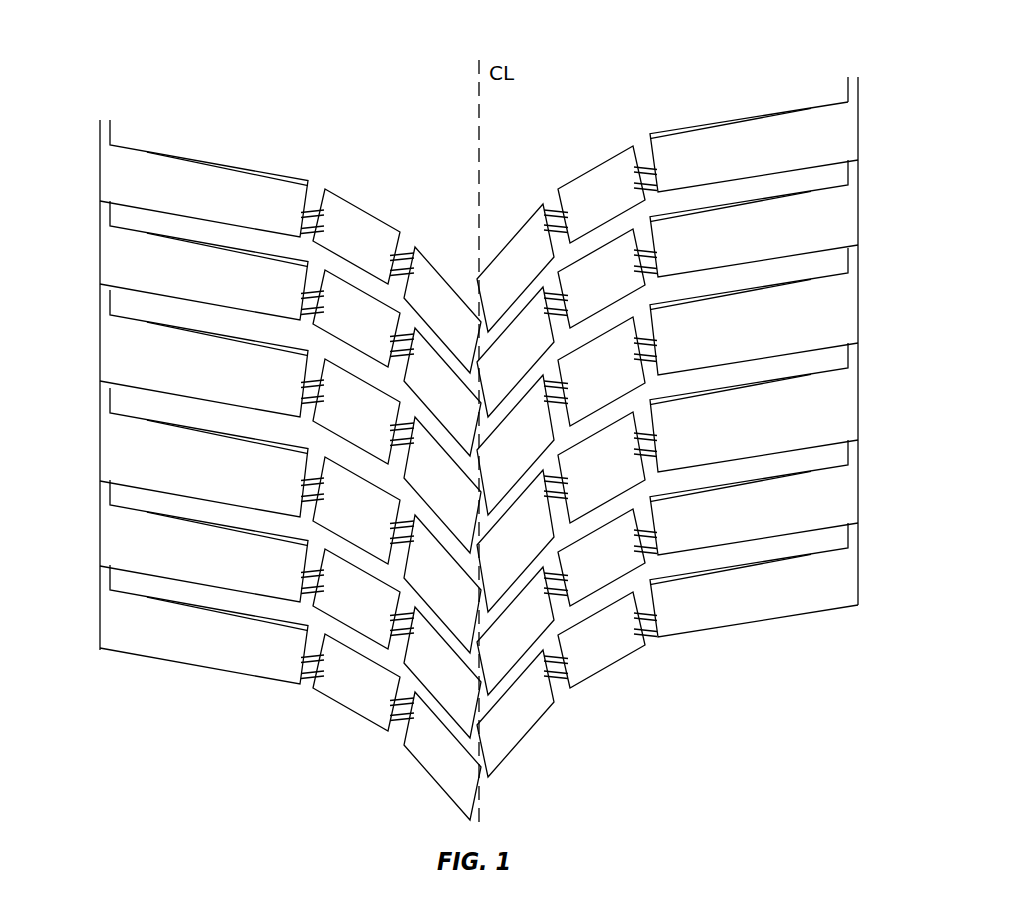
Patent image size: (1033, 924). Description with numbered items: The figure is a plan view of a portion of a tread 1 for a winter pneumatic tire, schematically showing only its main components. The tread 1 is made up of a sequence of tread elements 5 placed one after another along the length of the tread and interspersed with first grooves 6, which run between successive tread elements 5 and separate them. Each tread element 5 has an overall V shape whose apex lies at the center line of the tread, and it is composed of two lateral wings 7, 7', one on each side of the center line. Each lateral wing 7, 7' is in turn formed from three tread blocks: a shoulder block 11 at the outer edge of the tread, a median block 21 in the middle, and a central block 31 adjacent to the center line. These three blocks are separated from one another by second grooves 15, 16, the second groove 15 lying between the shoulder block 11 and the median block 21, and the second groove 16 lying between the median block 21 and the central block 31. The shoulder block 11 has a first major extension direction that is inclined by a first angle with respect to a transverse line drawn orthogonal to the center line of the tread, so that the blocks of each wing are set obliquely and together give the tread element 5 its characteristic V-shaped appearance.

The tread 1 is at (722, 722).
The tread element 5 is at (866, 212).
The first groove 6 is at (132, 503).
The lateral wing 7 is at (204, 136).
The lateral wing 7' is at (754, 113).
The shoulder block 11 is at (176, 150).
The second groove 15 is at (306, 684).
The second groove 16 is at (397, 738).
The median block 21 is at (366, 209).
The central block 31 is at (440, 267).